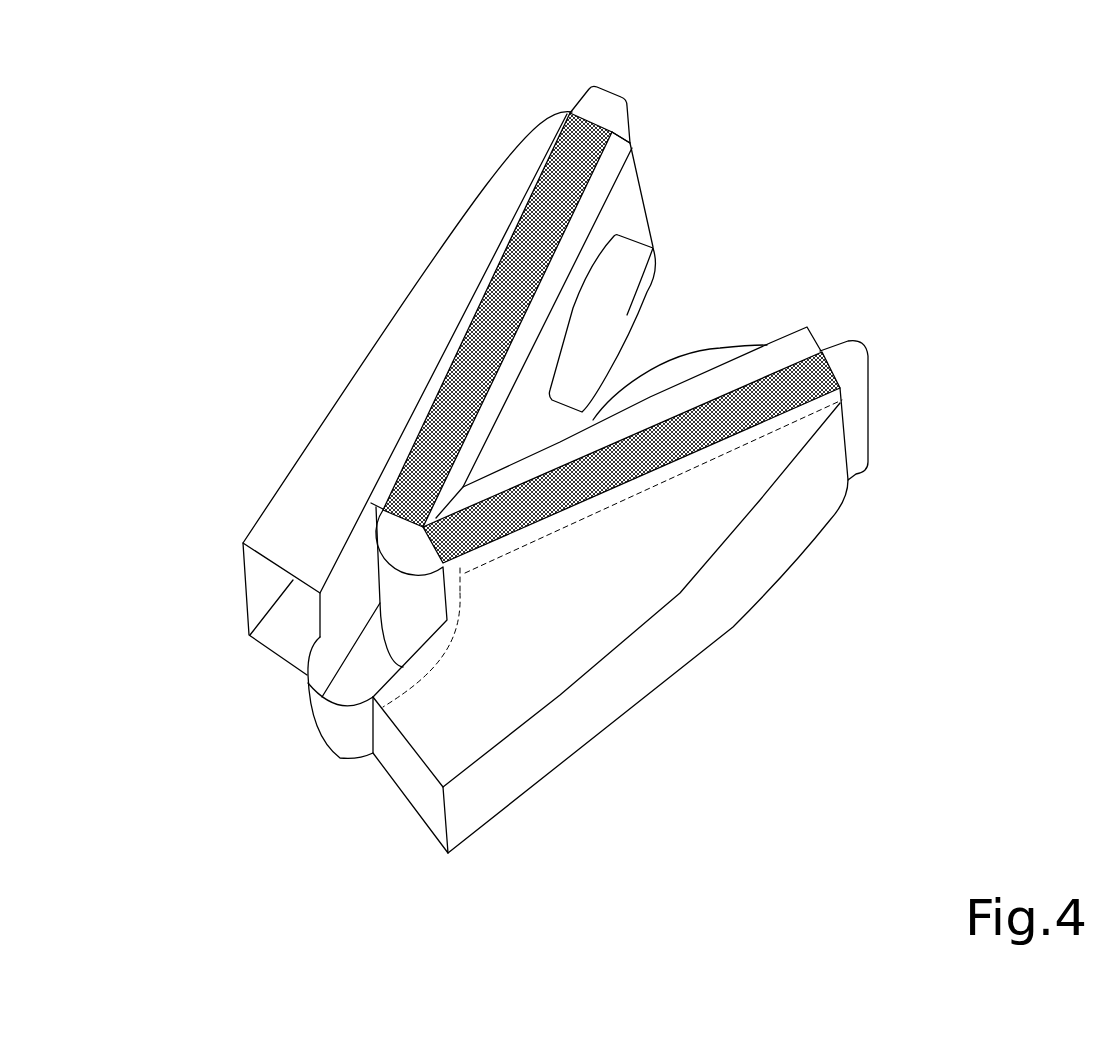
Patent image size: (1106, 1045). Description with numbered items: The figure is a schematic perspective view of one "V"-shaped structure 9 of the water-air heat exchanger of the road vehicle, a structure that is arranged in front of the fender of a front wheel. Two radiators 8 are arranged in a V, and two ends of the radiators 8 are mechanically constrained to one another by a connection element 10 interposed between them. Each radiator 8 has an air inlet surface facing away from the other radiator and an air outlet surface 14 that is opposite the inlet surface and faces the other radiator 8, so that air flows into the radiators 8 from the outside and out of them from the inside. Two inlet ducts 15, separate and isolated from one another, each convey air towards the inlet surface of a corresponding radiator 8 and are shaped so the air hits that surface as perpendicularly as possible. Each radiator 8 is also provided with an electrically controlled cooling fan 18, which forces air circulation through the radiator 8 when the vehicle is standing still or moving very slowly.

The "V"-shaped structure 9 is at (840, 117).
The radiator 8 is at (575, 157).
The electrically controlled cooling fan 18 is at (653, 246).
The inlet duct 15 is at (340, 467).
The connection element 10 is at (403, 610).
The air outlet surface 14 is at (541, 421).